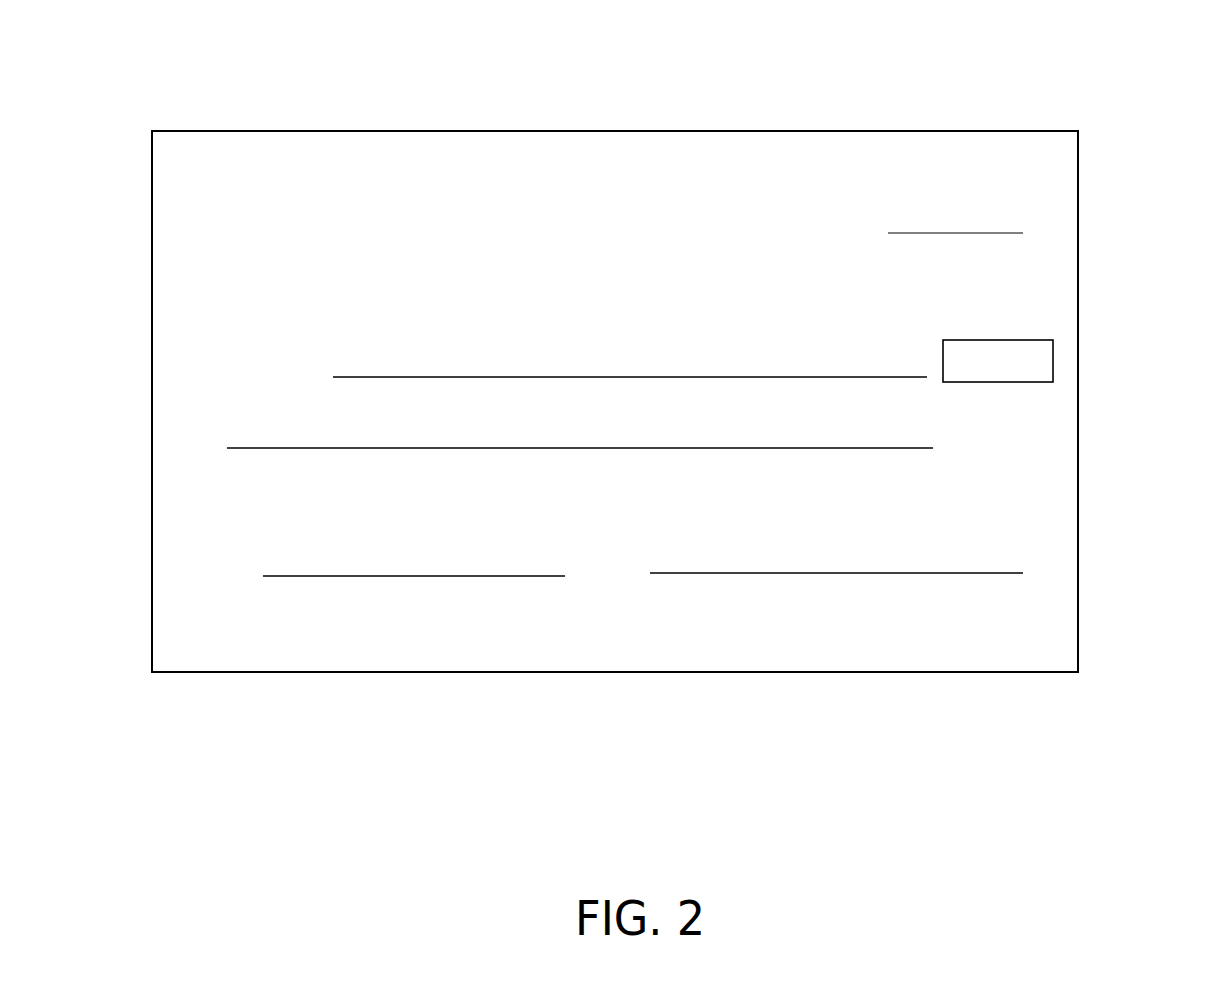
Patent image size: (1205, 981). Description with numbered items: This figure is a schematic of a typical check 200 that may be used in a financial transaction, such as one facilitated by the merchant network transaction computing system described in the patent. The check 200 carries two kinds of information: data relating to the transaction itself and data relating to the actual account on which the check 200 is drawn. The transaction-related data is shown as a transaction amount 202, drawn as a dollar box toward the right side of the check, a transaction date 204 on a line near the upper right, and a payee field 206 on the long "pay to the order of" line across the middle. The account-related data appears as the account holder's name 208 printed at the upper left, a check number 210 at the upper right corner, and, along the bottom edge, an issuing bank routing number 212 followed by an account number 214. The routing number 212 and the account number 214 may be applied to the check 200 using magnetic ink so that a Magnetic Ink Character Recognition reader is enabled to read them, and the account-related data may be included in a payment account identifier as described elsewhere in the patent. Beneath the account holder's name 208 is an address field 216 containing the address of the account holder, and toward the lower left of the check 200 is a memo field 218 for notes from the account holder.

The check 200 is at (983, 70).
The transaction amount 202 is at (1057, 360).
The transaction date 204 is at (957, 236).
The payee field 206 is at (530, 362).
The account holder's name 208 is at (167, 152).
The check number 210 is at (1060, 158).
The issuing bank routing number 212 is at (313, 685).
The account number 214 is at (568, 685).
The address field 216 is at (176, 218).
The memo field 218 is at (212, 565).